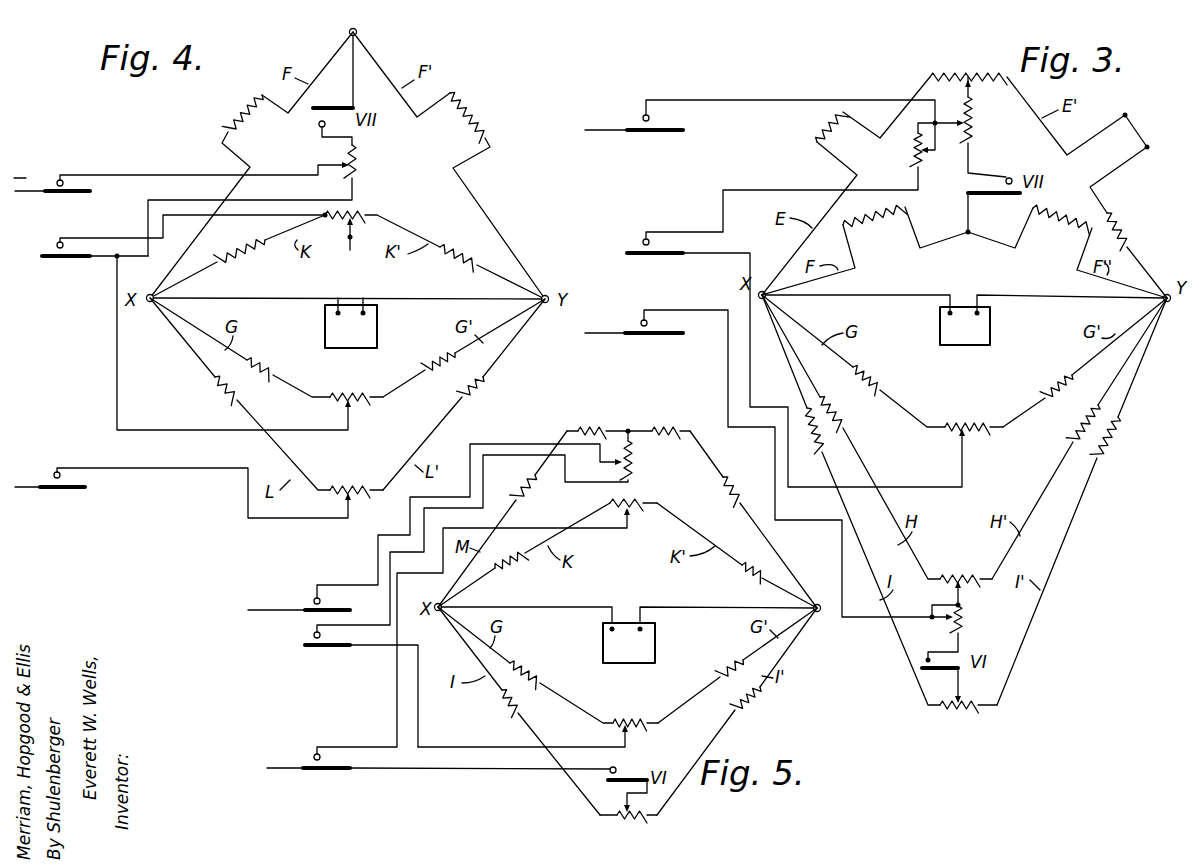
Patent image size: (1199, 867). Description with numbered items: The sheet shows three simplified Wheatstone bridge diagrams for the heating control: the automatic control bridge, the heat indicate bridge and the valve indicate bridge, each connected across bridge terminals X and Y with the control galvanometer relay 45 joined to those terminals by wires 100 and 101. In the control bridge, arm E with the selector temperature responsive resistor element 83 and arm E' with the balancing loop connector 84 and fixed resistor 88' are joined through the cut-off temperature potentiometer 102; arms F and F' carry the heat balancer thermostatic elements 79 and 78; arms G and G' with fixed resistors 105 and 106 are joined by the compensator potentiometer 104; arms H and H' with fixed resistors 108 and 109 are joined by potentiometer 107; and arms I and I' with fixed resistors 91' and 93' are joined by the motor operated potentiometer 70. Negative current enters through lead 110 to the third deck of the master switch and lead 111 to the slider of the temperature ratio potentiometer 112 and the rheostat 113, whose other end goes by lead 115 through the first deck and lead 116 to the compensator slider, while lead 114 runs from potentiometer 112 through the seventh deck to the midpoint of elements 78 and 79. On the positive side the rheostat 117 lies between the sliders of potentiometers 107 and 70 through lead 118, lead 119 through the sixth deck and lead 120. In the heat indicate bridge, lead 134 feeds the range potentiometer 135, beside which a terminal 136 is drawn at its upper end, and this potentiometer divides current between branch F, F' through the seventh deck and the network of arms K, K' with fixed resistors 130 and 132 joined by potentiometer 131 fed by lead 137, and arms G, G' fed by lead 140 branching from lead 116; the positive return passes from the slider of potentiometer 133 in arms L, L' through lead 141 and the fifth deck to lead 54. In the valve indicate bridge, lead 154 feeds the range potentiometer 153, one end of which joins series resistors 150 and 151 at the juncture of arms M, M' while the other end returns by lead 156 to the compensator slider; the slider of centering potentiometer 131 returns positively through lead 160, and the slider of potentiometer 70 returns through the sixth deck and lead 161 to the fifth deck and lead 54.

In FIG. 4, the control galvanometer relay 45 is at (355, 330).
In FIG. 5, the control galvanometer relay 45 is at (612, 645).
In FIG. 3, the control galvanometer relay 45 is at (970, 332).
In FIG. 4, the lead 54 is at (32, 490).
In FIG. 5, the lead 54 is at (288, 772).
In FIG. 3, the lead 54 is at (606, 338).
In FIG. 5, the motor operated potentiometer 70 is at (600, 816).
In FIG. 3, the motor operated potentiometer 70 is at (958, 712).
In FIG. 4, the heat balancer thermostatic element 78 is at (478, 112).
In FIG. 3, the heat balancer thermostatic element 78 is at (1067, 251).
In FIG. 4, the heat balancer thermostatic element 79 is at (228, 114).
In FIG. 3, the heat balancer thermostatic element 79 is at (870, 234).
In FIG. 3, the selector temperature responsive resistor element 83 is at (815, 130).
In FIG. 3, the balancing loop connector 84 is at (1140, 130).
In FIG. 3, the fixed resistor 88' is at (1133, 254).
In FIG. 5, the fixed resistor 91' is at (519, 711).
In FIG. 3, the fixed resistor 91' is at (847, 500).
In FIG. 5, the fixed resistor 93' is at (737, 711).
In FIG. 3, the fixed resistor 93' is at (1082, 501).
In FIG. 3, the wire 100 is at (878, 295).
In FIG. 3, the wire 101 is at (1052, 298).
In FIG. 3, the potentiometer 102 is at (978, 70).
In FIG. 4, the compensator potentiometer 104 is at (347, 392).
In FIG. 5, the compensator potentiometer 104 is at (640, 711).
In FIG. 3, the compensator potentiometer 104 is at (980, 418).
In FIG. 4, the fixed resistor 105 is at (268, 360).
In FIG. 5, the fixed resistor 105 is at (545, 652).
In FIG. 3, the fixed resistor 105 is at (875, 375).
In FIG. 4, the fixed resistor 106 is at (438, 358).
In FIG. 5, the fixed resistor 106 is at (736, 660).
In FIG. 3, the fixed resistor 106 is at (1058, 378).
In FIG. 3, the potentiometer 107 is at (978, 572).
In FIG. 4, the fixed resistor 108 is at (215, 402).
In FIG. 5, the fixed resistor 108 is at (528, 492).
In FIG. 3, the fixed resistor 108 is at (845, 417).
In FIG. 4, the fixed resistor 109 is at (480, 390).
In FIG. 5, the fixed resistor 109 is at (733, 480).
In FIG. 3, the fixed resistor 109 is at (1075, 428).
In FIG. 4, the lead 110 is at (24, 193).
In FIG. 5, the lead 110 is at (256, 613).
In FIG. 3, the lead 111 is at (758, 100).
In FIG. 3, the potentiometer 112 is at (975, 142).
In FIG. 3, the rheostat 113 is at (912, 164).
In FIG. 3, the lead 114 is at (968, 180).
In FIG. 3, the lead 115 is at (723, 208).
In FIG. 4, the lead 116 is at (160, 201).
In FIG. 5, the lead 116 is at (420, 708).
In FIG. 3, the lead 116 is at (748, 253).
In FIG. 3, the rheostat 117 is at (966, 625).
In FIG. 3, the lead 118 is at (962, 603).
In FIG. 3, the lead 119 is at (950, 658).
In FIG. 3, the lead 120 is at (850, 622).
In FIG. 4, the fixed resistor 130 is at (230, 266).
In FIG. 5, the fixed resistor 130 is at (512, 572).
In FIG. 4, the potentiometer 131 is at (365, 207).
In FIG. 5, the potentiometer 131 is at (633, 502).
In FIG. 4, the fixed resistor 132 is at (455, 257).
In FIG. 5, the fixed resistor 132 is at (734, 575).
In FIG. 4, the potentiometer 133 is at (352, 484).
In FIG. 4, the lead 134 is at (140, 170).
In FIG. 4, the potentiometer 135 is at (360, 161).
In FIG. 4, the terminal 136 is at (318, 134).
In FIG. 4, the lead 137 is at (100, 236).
In FIG. 4, the lead 140 is at (117, 366).
In FIG. 5, the lead 140 is at (638, 747).
In FIG. 4, the lead 141 is at (166, 472).
In FIG. 5, the resistor 150 is at (600, 424).
In FIG. 5, the resistor 151 is at (672, 416).
In FIG. 5, the potentiometer 153 is at (636, 470).
In FIG. 5, the lead 154 is at (518, 440).
In FIG. 5, the lead 156 is at (490, 472).
In FIG. 5, the lead 160 is at (397, 691).
In FIG. 5, the lead 161 is at (480, 772).